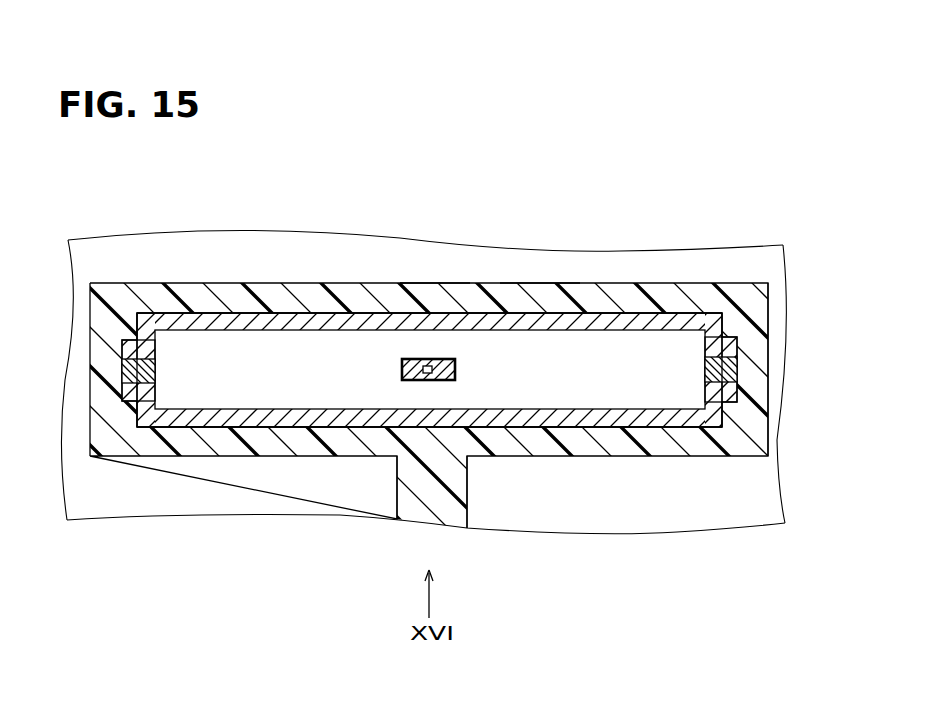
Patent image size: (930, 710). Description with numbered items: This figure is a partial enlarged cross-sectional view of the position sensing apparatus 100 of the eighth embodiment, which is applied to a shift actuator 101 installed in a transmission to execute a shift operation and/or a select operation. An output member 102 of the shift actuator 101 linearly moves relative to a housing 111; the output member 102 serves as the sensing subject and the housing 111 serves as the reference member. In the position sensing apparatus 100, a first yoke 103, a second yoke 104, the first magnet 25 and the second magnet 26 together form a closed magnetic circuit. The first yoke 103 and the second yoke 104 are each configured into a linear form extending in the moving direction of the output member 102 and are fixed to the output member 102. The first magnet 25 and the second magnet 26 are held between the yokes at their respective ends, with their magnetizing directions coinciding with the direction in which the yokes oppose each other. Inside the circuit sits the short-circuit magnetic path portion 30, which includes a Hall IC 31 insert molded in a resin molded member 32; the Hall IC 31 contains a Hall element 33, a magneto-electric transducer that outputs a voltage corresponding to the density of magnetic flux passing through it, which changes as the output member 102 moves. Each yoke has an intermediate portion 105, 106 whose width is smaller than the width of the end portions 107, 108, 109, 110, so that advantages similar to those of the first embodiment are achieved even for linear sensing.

The first magnet 25 is at (128, 372).
The second magnet 26 is at (737, 370).
The short-circuit magnetic path portion 30 is at (482, 466).
The Hall IC 31 is at (455, 376).
The molded member 32 is at (455, 361).
The Hall element 33 is at (407, 380).
The position sensing apparatus 100 is at (279, 312).
The shift actuator 101 is at (751, 245).
The output member 102 is at (625, 295).
The first yoke 103 is at (216, 428).
The second yoke 104 is at (212, 312).
The intermediate portion 105 is at (418, 418).
The intermediate portion 106 is at (432, 308).
The end portion 107 is at (131, 396).
The end portion 108 is at (712, 418).
The end portion 109 is at (132, 330).
The end portion 110 is at (710, 316).
The housing 111 is at (538, 263).